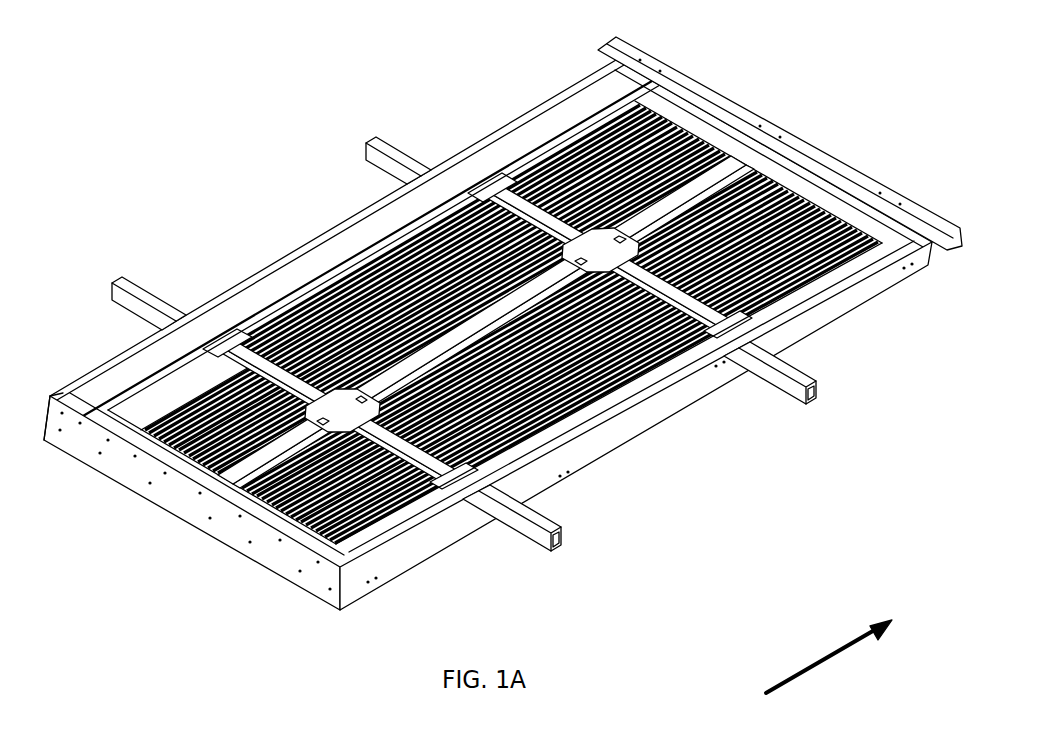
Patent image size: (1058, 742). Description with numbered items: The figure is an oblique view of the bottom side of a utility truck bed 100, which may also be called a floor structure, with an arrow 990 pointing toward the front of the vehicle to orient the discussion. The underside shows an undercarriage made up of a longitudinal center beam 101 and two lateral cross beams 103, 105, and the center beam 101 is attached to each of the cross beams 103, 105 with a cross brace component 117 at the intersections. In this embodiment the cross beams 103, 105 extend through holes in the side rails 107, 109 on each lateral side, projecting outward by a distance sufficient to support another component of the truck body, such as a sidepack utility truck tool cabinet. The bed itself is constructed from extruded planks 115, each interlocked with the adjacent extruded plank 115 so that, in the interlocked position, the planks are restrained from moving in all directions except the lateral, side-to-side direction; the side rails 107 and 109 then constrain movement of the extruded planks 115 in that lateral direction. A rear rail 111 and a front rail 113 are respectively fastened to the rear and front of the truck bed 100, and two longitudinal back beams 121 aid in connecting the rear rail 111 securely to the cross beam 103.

The utility truck bed 100 is at (116, 706).
The center beam 101 is at (762, 156).
The cross beam 103 is at (140, 288).
The cross beam 105 is at (393, 137).
The side rail 107 is at (600, 452).
The side rail 109 is at (304, 250).
The rear rail 111 is at (240, 538).
The front rail 113 is at (852, 168).
The extruded plank 115 is at (670, 377).
The cross brace component 117 is at (595, 242).
The longitudinal back beam 121 is at (123, 378).
The arrow 990 is at (795, 664).